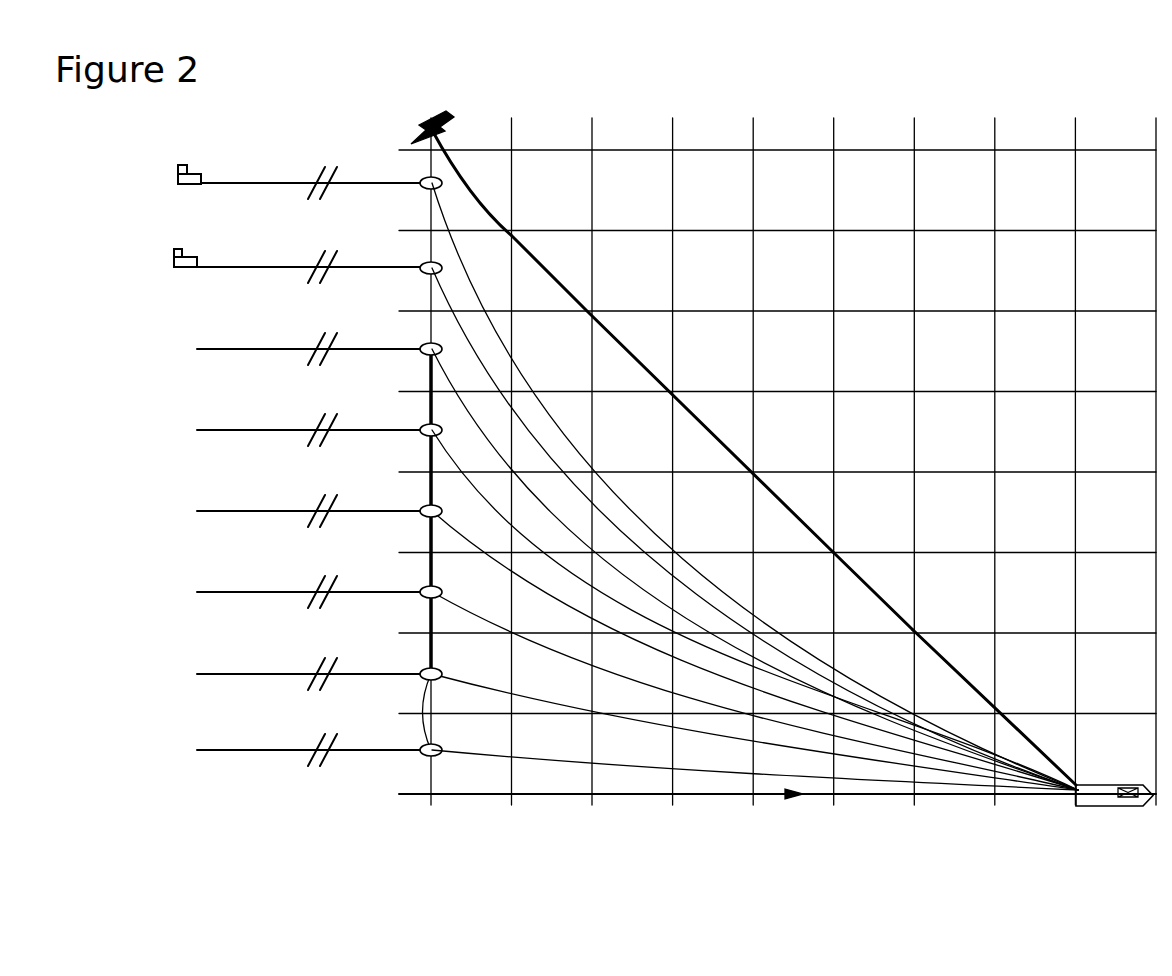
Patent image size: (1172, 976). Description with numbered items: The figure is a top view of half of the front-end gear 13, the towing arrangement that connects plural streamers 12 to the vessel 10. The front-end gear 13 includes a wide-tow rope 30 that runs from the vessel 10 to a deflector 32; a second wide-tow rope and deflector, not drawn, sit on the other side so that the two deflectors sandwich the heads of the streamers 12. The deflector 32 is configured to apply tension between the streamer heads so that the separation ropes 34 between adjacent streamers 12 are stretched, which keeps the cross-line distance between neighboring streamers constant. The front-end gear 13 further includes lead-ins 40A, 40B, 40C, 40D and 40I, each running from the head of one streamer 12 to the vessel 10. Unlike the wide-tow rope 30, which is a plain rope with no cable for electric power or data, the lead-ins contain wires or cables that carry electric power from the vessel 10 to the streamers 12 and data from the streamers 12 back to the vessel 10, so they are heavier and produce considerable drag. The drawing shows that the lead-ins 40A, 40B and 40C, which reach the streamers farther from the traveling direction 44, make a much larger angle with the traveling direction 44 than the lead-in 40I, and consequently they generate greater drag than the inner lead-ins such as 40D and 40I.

The vessel 10 is at (1105, 807).
The streamers 12 is at (367, 781).
The front-end gear 13 is at (872, 568).
The wide-tow rope 30 is at (608, 346).
The deflector 32 is at (428, 124).
The separation ropes 34 is at (430, 206).
The lead-in 40A is at (514, 370).
The lead-in 40B is at (527, 432).
The lead-in 40C is at (535, 494).
The lead-in 40D is at (552, 559).
The lead-in 40I is at (532, 758).
The traveling direction 44 is at (410, 797).